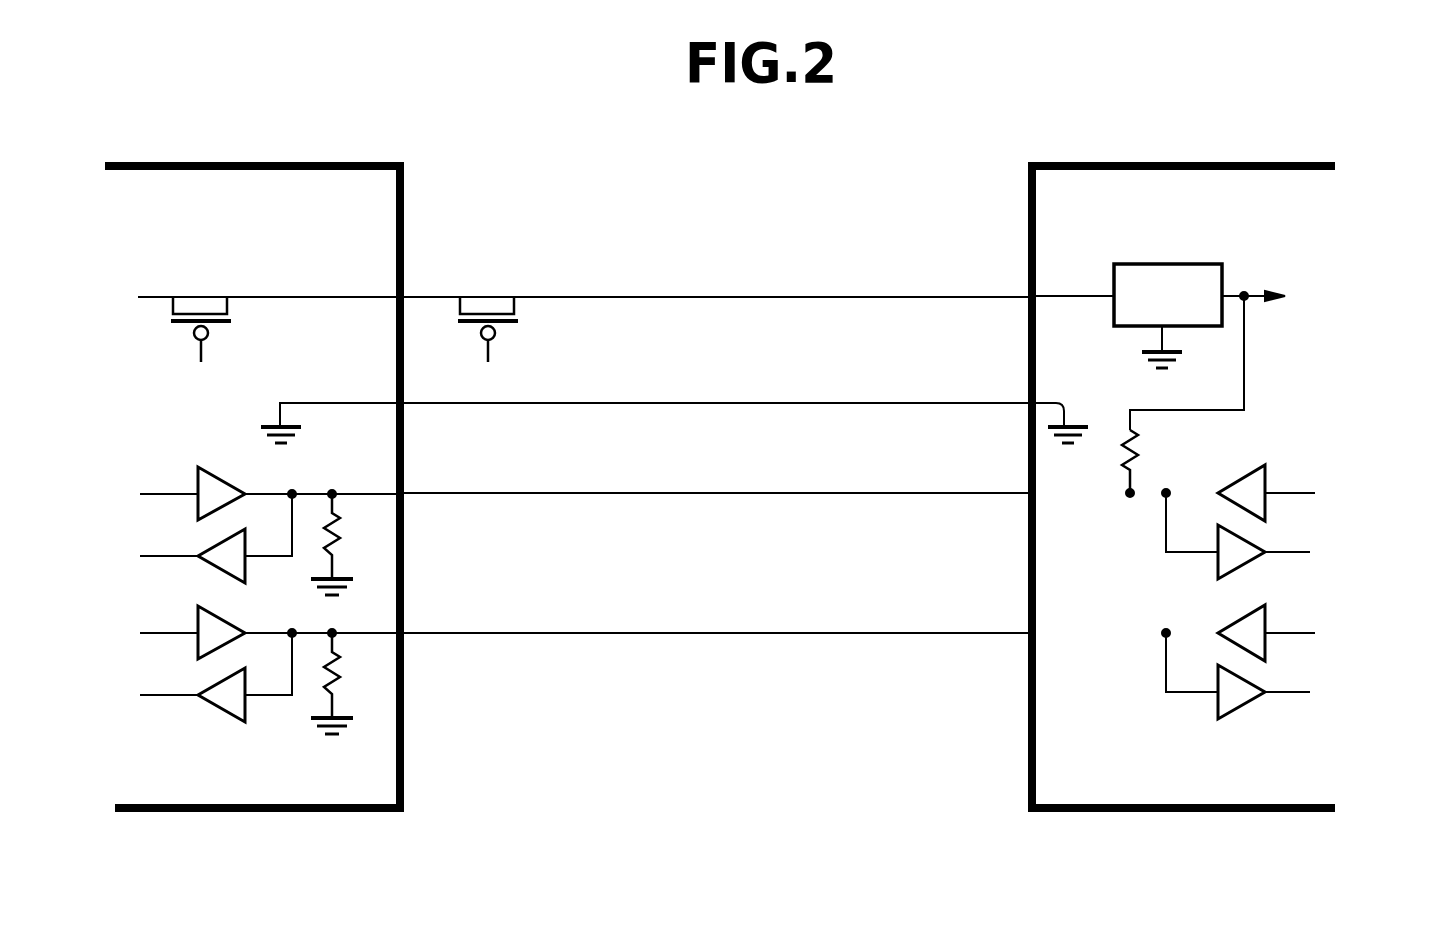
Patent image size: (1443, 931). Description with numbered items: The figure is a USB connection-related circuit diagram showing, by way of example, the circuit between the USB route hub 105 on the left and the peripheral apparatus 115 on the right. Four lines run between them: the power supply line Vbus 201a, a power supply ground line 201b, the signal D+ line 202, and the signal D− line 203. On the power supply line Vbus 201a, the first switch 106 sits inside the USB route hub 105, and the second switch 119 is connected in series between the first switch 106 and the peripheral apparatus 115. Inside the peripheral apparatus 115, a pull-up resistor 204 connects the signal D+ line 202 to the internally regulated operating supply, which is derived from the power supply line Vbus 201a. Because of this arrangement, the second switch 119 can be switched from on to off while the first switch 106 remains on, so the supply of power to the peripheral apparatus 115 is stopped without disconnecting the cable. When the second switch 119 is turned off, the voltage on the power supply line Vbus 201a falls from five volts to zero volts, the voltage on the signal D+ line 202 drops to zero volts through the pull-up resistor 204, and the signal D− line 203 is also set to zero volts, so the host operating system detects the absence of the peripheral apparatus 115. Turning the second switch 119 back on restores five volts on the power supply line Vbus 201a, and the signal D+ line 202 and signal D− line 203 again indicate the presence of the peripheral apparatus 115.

The USB route hub 105 is at (213, 164).
The first switch 106 is at (176, 296).
The peripheral apparatus 115 is at (1100, 164).
The second switch 119 is at (488, 304).
The power supply line Vbus 201a is at (900, 296).
The power supply line (GND) 201b is at (912, 403).
The signal D+ line 202 is at (905, 493).
The signal D− line 203 is at (892, 633).
The pull-up resistor 204 is at (1140, 443).